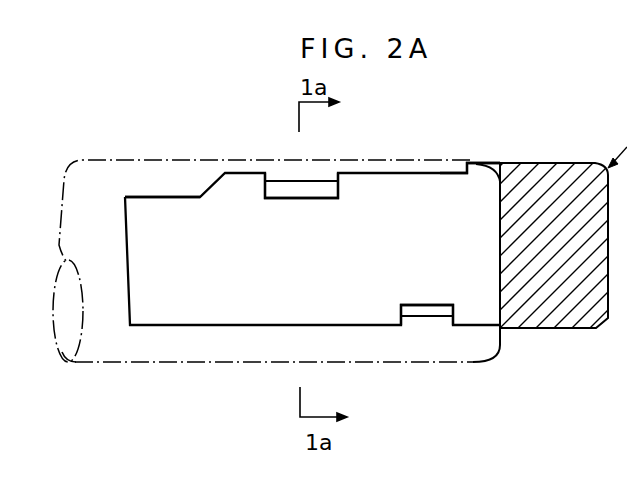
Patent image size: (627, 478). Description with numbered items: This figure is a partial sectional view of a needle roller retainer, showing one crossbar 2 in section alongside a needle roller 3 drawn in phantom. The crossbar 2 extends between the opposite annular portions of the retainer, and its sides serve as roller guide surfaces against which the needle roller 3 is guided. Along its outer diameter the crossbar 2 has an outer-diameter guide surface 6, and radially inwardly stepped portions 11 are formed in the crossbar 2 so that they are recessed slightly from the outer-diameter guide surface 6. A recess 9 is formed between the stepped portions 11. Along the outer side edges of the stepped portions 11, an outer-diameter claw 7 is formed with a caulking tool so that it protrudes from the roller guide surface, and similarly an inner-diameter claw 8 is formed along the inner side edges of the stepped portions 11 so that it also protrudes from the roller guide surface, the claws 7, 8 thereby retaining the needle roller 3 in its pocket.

The crossbar portion 2 is at (240, 300).
The needle roller 3 is at (102, 185).
The outer-diameter guide surface 6 is at (541, 163).
The outer-diameter claw 7 is at (312, 189).
The inner-diameter claw 8 is at (432, 310).
The recess 9 is at (168, 197).
The radially inwardly stepped portion 11 is at (413, 162).